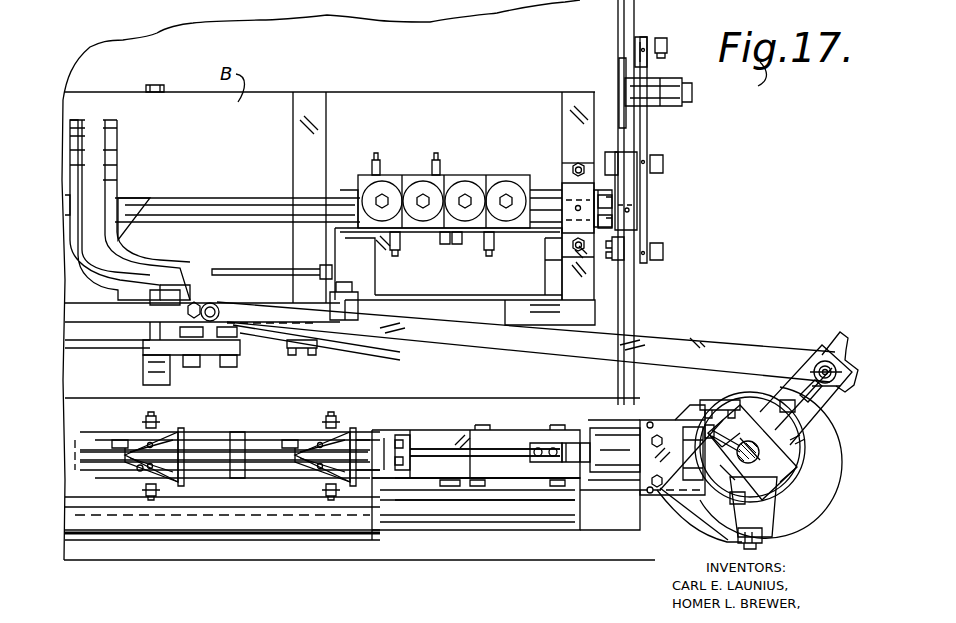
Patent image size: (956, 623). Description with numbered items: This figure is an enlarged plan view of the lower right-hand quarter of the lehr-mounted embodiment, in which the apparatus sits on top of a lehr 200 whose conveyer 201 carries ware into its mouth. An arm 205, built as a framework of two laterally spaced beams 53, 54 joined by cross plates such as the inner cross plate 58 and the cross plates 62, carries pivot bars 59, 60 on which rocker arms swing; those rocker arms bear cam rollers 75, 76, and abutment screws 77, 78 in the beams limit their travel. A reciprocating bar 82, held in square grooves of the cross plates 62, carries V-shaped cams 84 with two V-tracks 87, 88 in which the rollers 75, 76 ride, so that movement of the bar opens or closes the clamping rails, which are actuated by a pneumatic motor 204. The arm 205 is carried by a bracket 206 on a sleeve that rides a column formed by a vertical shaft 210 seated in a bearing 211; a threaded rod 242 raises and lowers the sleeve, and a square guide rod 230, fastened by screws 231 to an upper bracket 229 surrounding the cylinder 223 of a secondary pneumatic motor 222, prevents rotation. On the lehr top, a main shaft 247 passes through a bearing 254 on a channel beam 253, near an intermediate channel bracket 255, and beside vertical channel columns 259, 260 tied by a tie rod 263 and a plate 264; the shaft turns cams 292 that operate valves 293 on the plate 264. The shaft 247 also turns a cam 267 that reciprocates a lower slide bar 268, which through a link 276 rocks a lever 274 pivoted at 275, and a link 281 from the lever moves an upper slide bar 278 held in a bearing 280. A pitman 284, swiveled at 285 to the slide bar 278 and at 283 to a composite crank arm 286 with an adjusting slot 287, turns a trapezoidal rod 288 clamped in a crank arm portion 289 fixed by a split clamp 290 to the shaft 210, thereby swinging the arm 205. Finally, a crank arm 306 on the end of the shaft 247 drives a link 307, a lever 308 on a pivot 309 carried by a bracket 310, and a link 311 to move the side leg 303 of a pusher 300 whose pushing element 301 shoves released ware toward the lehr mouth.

The lehr 200 is at (158, 32).
The intermediate channel bracket 255 is at (308, 96).
The channel-shaped beam 253 is at (578, 98).
The bearing 254 is at (566, 178).
The cam 267 is at (100, 148).
The main shaft 247 is at (258, 198).
The cams 292 is at (376, 160).
The valves 293 is at (396, 180).
The vertical column 259 is at (330, 241).
The plate 264 is at (456, 236).
The vertical column 260 is at (560, 280).
The secondary slide bar 278 is at (437, 312).
The bearing 280 is at (358, 300).
The tie rod 263 is at (252, 268).
The lower slide bar 268 is at (102, 316).
The cylinder 223 is at (722, 372).
The swivel 285 is at (214, 306).
The link 281 is at (255, 335).
The lever 274 is at (210, 358).
The pivot 275 is at (143, 386).
The link 276 is at (320, 352).
The conveyer 201 is at (312, 540).
The arm 205 is at (262, 482).
The bar 82 is at (115, 462).
The cam roller 76 is at (318, 476).
The V-track 87 is at (170, 430).
The V-track 88 is at (152, 470).
The abutment screw 77 is at (156, 424).
The abutment screw 78 is at (160, 490).
The V-shaped cams 84 is at (120, 438).
The cross plates 62 is at (240, 435).
The cam roller 75 is at (338, 430).
The pivot bar 59 is at (384, 440).
The beam 53 is at (446, 434).
The cross plate 58 is at (410, 447).
The pivot bar 60 is at (378, 480).
The pusher device 300 is at (430, 510).
The primary pushing element 301 is at (495, 505).
The beam 54 is at (450, 486).
The pneumatic motor 204 is at (614, 430).
The side leg 303 is at (640, 322).
The bracket 310 is at (618, 66).
The link 307 is at (660, 64).
The pivot 309 is at (692, 95).
The lever 308 is at (658, 120).
The crank arm 306 is at (630, 187).
The link 311 is at (640, 232).
The upper bracket 229 is at (790, 515).
The vertical shaft 210 is at (785, 470).
The split clamp 290 is at (775, 495).
The bearing 211 is at (820, 452).
The crank arm portion 289 is at (770, 386).
The trapezoidal rod 288 is at (790, 364).
The swivel 283 is at (822, 362).
The composite crank arm 286 is at (830, 330).
The slot 287 is at (826, 342).
The pitman 284 is at (716, 334).
The secondary pneumatic motor 222 is at (732, 382).
The threaded rod 242 is at (672, 438).
The bracket 206 is at (660, 494).
The guide rod 230 is at (715, 538).
The screws 231 is at (755, 548).